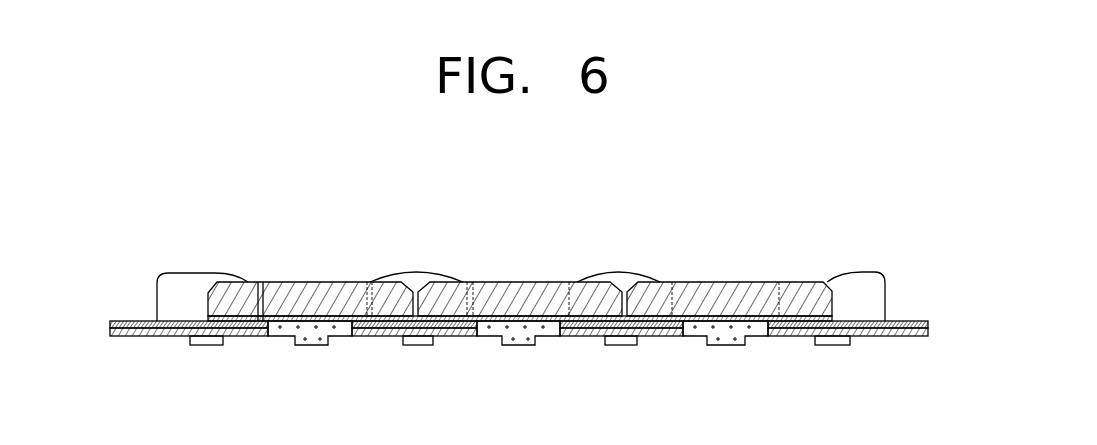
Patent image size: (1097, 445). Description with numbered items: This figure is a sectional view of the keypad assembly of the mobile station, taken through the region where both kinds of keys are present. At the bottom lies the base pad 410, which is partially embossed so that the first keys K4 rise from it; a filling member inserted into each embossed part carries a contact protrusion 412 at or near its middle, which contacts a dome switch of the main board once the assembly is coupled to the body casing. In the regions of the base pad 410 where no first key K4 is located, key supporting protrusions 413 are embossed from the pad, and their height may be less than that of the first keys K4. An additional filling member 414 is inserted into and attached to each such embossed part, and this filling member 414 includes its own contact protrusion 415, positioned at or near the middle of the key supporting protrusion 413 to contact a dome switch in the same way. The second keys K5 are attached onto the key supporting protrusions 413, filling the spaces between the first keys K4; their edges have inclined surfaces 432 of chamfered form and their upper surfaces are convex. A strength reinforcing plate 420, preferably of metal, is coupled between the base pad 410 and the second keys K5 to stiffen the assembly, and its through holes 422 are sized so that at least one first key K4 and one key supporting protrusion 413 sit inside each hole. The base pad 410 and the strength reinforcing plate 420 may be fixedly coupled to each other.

The base pad 410 is at (136, 345).
The contact protrusion 412 is at (621, 346).
The key supporting protrusion 413 is at (502, 318).
The filling member 414 is at (342, 330).
The contact protrusion 415 is at (303, 346).
The strength reinforcing plate 420 is at (131, 310).
The through hole 422 is at (261, 326).
The inclined surface 432 is at (824, 281).
The first key K4 is at (623, 281).
The second key K5 is at (739, 290).